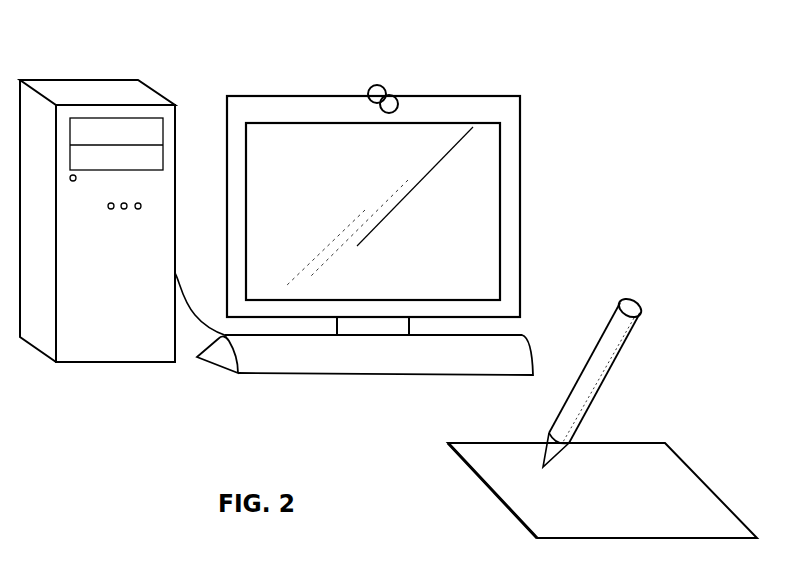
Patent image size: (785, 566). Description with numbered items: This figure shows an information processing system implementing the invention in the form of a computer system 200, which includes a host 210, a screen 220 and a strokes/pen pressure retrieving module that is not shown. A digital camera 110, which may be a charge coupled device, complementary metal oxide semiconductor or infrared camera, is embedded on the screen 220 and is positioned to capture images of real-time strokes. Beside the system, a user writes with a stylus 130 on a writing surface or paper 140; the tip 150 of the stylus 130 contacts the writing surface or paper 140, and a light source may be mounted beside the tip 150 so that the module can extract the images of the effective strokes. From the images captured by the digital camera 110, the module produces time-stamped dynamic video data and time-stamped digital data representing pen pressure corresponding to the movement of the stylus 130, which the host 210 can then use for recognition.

The computer system 200 is at (200, 84).
The host 210 is at (95, 368).
The screen 220 is at (523, 257).
The digital camera 110 is at (428, 65).
The stylus 130 is at (628, 352).
The tip 150 is at (537, 468).
The writing surface or paper 140 is at (718, 490).